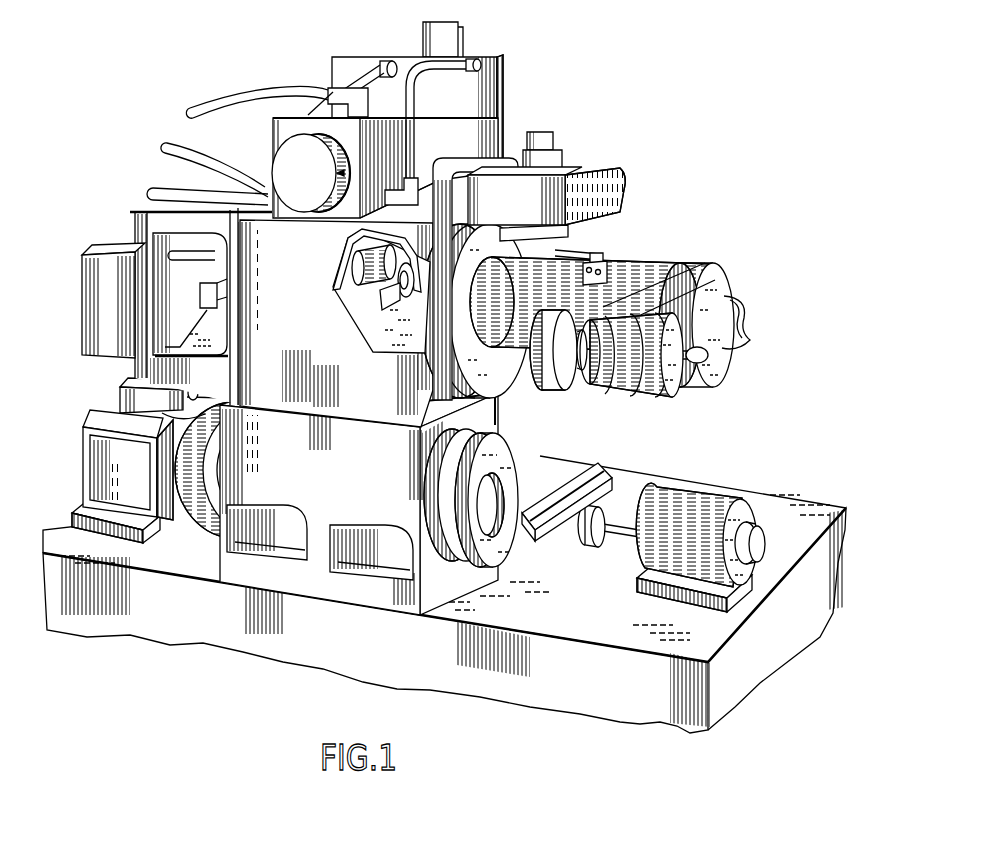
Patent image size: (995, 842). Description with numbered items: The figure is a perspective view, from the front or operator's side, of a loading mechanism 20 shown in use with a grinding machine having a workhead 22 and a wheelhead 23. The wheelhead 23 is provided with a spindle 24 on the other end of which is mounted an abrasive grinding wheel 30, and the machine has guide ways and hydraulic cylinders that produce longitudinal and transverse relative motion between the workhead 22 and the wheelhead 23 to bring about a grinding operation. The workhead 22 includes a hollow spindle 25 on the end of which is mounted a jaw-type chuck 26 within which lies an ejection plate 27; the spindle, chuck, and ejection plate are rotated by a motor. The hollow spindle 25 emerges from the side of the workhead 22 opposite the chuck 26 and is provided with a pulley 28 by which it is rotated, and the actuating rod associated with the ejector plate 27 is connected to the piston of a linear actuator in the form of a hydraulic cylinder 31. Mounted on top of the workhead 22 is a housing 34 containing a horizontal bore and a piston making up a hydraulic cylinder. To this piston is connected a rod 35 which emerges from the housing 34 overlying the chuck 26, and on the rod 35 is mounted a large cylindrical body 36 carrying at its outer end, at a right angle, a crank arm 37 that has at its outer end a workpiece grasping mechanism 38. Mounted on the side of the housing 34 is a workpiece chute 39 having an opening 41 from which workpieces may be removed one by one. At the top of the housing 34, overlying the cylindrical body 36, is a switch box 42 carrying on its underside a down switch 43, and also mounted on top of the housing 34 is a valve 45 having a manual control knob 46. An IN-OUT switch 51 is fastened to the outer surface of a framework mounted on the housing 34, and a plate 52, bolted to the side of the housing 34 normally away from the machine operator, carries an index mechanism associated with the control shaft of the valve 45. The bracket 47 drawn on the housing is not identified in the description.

The loading mechanism 20 is at (444, 366).
The workhead 22 is at (313, 574).
The wheelhead 23 is at (703, 503).
The spindle 24 is at (628, 527).
The hollow spindle 25 is at (500, 428).
The jaw-type chuck 26 is at (503, 460).
The ejection plate 27 is at (487, 502).
The pulley 28 is at (193, 535).
The abrasive grinding wheel 30 is at (589, 542).
The hydraulic cylinder 31 is at (98, 464).
The housing 34 is at (258, 218).
The rod 35 is at (510, 348).
The cylindrical body 36 is at (653, 270).
The crank arm 37 is at (697, 267).
The workpiece grasping mechanism 38 is at (648, 397).
The workpiece chute 39 is at (352, 297).
The opening 41 is at (395, 292).
The switch box 42 is at (583, 178).
The down switch 43 is at (603, 258).
The valve 45 is at (477, 128).
The manual control knob 46 is at (316, 203).
The roller bracket 47 is at (358, 259).
The IN-OUT switch 51 is at (105, 255).
The plate 52 is at (490, 72).